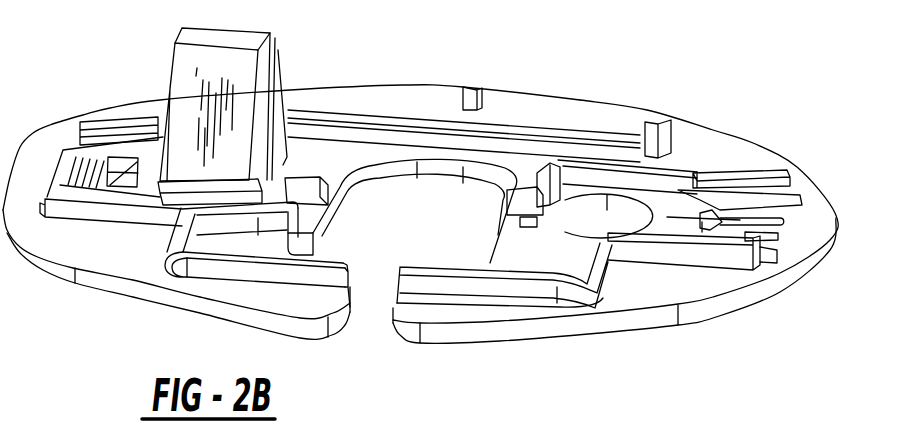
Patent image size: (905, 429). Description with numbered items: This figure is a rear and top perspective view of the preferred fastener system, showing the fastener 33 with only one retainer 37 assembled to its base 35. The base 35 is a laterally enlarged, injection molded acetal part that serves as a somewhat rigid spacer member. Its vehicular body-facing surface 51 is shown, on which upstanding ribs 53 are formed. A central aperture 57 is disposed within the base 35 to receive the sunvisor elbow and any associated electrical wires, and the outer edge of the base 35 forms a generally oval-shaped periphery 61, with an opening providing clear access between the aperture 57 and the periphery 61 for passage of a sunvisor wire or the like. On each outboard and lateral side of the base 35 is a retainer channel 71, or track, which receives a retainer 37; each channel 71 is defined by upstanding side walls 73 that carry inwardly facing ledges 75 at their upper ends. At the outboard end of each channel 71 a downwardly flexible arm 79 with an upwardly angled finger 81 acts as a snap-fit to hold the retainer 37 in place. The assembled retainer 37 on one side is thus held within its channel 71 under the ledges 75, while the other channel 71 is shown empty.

The fastener 33 is at (507, 48).
The base 35 is at (340, 97).
The retainer 37 is at (166, 58).
The vehicular body-facing surface 51 is at (590, 103).
The upstanding ribs 53 is at (393, 127).
The central aperture 57 is at (355, 177).
The periphery 61 is at (607, 323).
The retainer channel 71 is at (788, 232).
The side walls 73 is at (670, 257).
The ledges 75 is at (730, 183).
The flexible arm 79 is at (748, 235).
The finger 81 is at (727, 220).